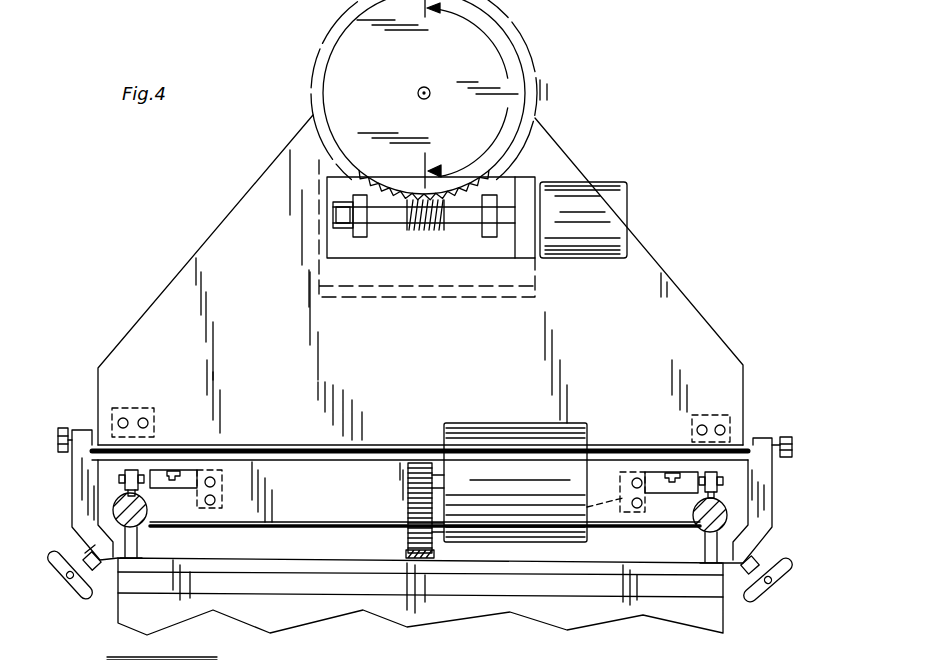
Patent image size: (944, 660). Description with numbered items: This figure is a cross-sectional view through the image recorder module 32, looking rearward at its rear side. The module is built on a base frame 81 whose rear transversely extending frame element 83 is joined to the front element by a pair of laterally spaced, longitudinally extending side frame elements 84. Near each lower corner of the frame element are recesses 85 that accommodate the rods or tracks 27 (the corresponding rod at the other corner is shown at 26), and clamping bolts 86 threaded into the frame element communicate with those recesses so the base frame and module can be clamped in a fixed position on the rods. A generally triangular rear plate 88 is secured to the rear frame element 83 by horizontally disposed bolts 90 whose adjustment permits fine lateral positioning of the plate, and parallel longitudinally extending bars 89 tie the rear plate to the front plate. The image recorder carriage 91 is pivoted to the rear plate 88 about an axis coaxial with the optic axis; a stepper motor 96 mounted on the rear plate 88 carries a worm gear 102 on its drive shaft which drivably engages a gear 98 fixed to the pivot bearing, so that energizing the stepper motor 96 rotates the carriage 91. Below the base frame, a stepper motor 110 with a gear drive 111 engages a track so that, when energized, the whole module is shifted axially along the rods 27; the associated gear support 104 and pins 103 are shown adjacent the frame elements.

The image recorder module 32 is at (663, 143).
The rear plate 88 is at (642, 272).
The gear 98 is at (520, 63).
The image recorder carriage 91 is at (542, 90).
The stepper motor 96 is at (615, 198).
The worm gear 102 is at (428, 230).
The longitudinally extending bars 89 is at (143, 408).
The bolts 90 is at (58, 432).
The pin 103 is at (119, 479).
The recesses 85 is at (147, 510).
The side frame elements 84 is at (222, 506).
The clamping bolts 86 is at (52, 555).
The rods or tracks 27 is at (142, 520).
The stem 26 is at (698, 530).
The rear transversely extending frame element 83 is at (353, 513).
The stepper motor 110 is at (497, 438).
The gear drive 111 is at (407, 487).
The gear support 104 is at (433, 560).
The base frame 81 is at (507, 540).